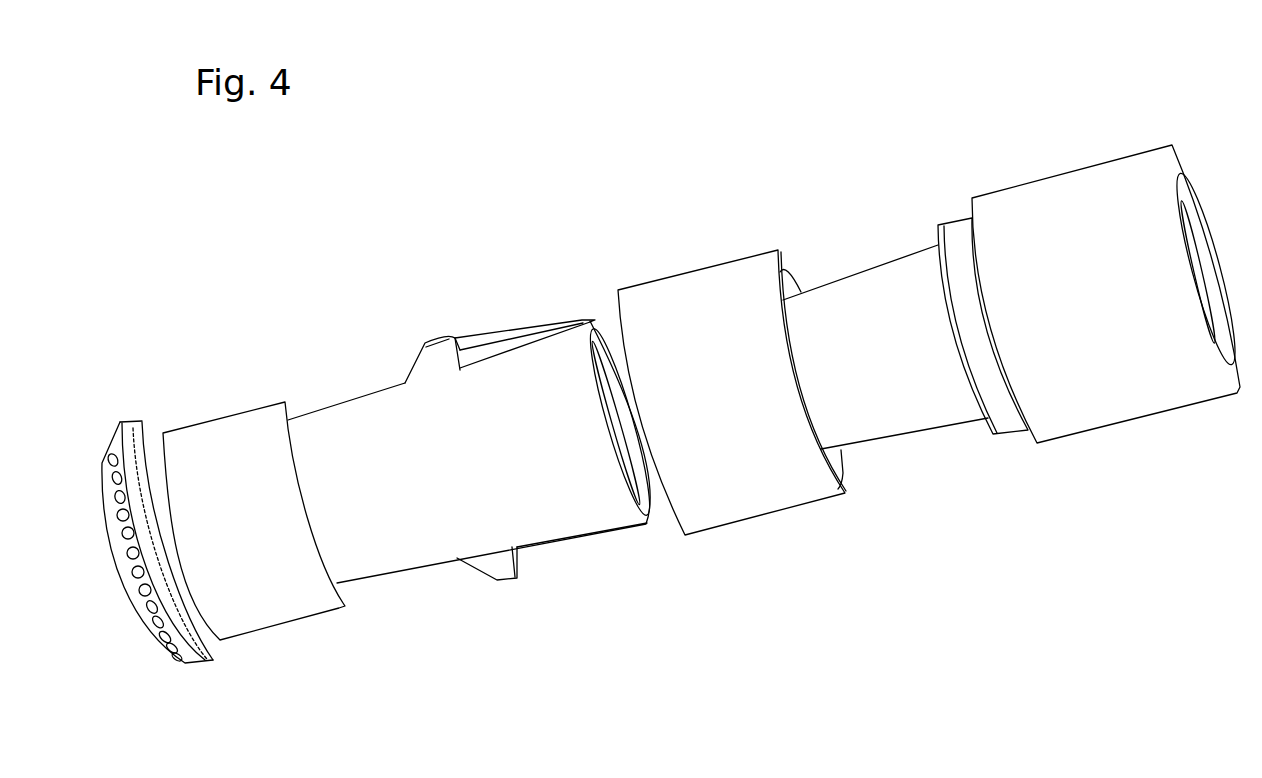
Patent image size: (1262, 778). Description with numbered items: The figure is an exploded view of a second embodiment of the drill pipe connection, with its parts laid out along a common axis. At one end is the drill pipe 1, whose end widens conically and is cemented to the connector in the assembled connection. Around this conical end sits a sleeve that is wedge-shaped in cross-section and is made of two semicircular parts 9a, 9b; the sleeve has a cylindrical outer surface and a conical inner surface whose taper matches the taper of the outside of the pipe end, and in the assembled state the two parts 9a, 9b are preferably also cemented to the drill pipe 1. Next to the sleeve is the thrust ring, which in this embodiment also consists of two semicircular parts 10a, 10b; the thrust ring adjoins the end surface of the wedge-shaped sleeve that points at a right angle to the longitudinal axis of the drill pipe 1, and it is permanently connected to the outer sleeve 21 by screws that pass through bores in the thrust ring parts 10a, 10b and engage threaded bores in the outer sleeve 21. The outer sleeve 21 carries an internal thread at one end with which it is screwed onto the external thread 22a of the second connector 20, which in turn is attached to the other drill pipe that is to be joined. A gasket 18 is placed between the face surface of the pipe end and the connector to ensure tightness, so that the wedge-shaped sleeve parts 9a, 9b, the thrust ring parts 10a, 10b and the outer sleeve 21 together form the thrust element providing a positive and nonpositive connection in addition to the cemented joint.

The drill pipe 1 is at (562, 405).
The semicircular part of the wedge-shaped sleeve 9a is at (490, 345).
The semicircular part of the wedge-shaped sleeve 9b is at (255, 513).
The thrust ring part 10a is at (430, 358).
The thrust ring part 10b is at (138, 490).
The gasket 18 is at (938, 245).
The second connector 20 is at (1105, 273).
The outer sleeve 21 is at (727, 335).
The external thread 22a is at (958, 248).